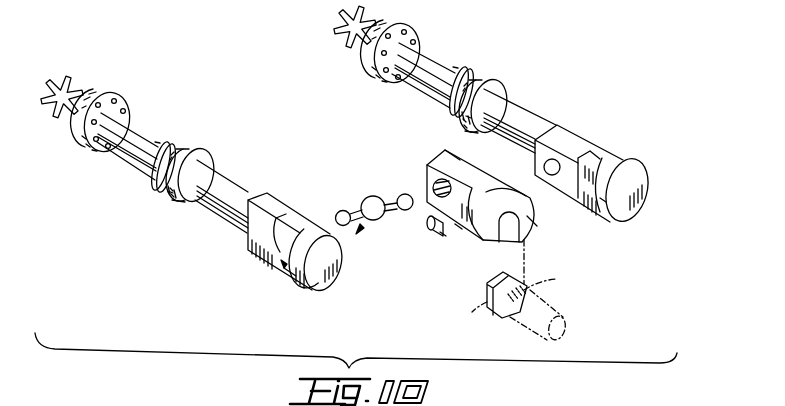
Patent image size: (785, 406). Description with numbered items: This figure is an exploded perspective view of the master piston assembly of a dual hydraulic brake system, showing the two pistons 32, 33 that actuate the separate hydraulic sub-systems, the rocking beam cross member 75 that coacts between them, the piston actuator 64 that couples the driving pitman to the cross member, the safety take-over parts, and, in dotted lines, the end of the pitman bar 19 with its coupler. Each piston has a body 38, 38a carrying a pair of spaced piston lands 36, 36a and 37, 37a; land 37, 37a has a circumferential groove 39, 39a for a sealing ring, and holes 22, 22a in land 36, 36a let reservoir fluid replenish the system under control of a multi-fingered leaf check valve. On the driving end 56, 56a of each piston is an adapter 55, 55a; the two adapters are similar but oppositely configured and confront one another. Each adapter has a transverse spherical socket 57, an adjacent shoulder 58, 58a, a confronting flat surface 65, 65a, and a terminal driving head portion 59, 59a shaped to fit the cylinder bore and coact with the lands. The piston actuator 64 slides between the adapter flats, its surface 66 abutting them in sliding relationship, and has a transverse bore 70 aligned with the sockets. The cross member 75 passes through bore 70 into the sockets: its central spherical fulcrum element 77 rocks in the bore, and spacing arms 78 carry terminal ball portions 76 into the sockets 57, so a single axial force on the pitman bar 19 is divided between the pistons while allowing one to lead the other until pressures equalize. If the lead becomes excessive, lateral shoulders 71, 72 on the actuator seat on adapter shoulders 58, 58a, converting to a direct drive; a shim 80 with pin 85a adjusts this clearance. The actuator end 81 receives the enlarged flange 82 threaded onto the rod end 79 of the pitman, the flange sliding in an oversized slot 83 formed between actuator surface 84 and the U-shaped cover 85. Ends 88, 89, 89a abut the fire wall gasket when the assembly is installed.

The pitman bar 19 is at (537, 300).
The holes 22 is at (119, 101).
The holes 22a is at (388, 80).
The piston 32 is at (143, 116).
The piston 33 is at (428, 46).
The piston land 36 is at (108, 93).
The piston land 36a is at (400, 24).
The piston land 37 is at (198, 150).
The piston land 37a is at (501, 91).
The piston body 38 is at (165, 142).
The piston body 38a is at (462, 70).
The circumferential groove 39 is at (167, 192).
The circumferential groove 39a is at (454, 114).
The adapter 55 is at (284, 268).
The adapter 55a is at (577, 135).
The driving end 56 is at (218, 172).
The driving end 56a is at (528, 112).
The socket 57 is at (561, 145).
The shoulder 58 is at (293, 213).
The shoulder 58a is at (597, 205).
The driving head portion 59 is at (298, 289).
The driving head portion 59a is at (621, 160).
The piston actuator 64 is at (475, 243).
The confronting surface 65 is at (280, 191).
The confronting surface 65a is at (538, 155).
The confronting surface 66 is at (453, 154).
The bore 70 is at (434, 196).
The shoulder 71 is at (456, 226).
The shoulder 72 is at (497, 186).
The rocking beam cross member 75 is at (361, 229).
The terminal ball portions 76 is at (403, 194).
The spherical fulcrum element 77 is at (369, 196).
The spacing arms 78 is at (354, 211).
The rod end 79 is at (557, 280).
The shim 80 is at (429, 233).
The end of piston actuator 81 is at (539, 262).
The flange 82 is at (471, 316).
The slot 83 is at (486, 246).
The actuator surface 84 is at (493, 295).
The U-shaped cover 85 is at (505, 218).
The pin 85a is at (438, 240).
The end 88 is at (532, 224).
The end 89 is at (338, 276).
The end 89a is at (645, 209).